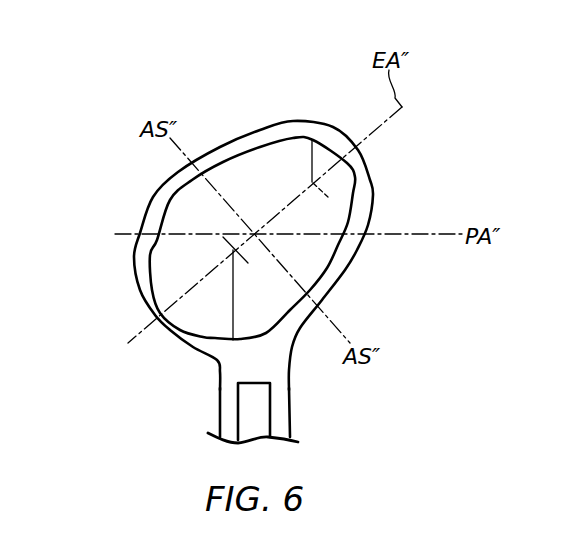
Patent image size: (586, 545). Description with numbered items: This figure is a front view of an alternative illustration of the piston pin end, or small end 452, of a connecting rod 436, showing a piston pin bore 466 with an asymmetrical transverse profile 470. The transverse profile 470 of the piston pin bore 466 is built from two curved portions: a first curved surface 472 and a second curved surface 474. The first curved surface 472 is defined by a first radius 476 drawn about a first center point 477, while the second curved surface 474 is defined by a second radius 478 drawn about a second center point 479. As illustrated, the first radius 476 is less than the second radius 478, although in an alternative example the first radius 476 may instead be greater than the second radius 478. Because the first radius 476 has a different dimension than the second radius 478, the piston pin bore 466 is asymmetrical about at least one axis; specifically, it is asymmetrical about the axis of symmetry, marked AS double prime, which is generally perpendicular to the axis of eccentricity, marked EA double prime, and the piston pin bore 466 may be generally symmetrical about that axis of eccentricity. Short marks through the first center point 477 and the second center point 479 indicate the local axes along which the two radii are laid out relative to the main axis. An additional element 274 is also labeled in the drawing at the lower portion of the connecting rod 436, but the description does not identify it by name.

The stem 274 is at (266, 336).
The connecting rod 436 is at (432, 177).
The piston pin end 452 is at (342, 104).
The piston pin bore 466 is at (164, 274).
The transverse profile 470 is at (315, 248).
The first curved surface 472 is at (354, 186).
The second curved surface 474 is at (211, 330).
The first radius 476 is at (312, 162).
The first center point 477 is at (312, 182).
The second radius 478 is at (234, 308).
The second center point 479 is at (233, 250).